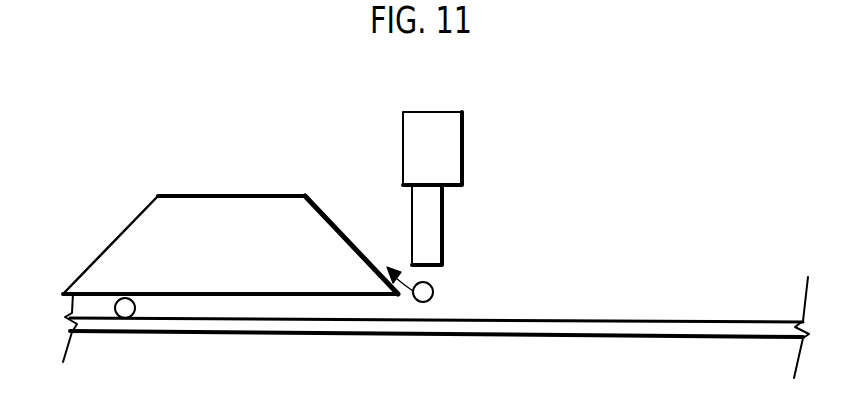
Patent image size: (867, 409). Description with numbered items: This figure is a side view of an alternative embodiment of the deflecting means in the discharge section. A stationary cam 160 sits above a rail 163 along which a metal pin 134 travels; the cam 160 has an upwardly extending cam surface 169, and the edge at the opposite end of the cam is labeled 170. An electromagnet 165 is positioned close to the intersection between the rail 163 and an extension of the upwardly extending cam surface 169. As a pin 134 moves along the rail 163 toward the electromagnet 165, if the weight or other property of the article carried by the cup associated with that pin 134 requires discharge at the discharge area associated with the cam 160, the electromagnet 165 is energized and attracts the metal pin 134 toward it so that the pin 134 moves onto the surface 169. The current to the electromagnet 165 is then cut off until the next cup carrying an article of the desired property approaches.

The stationary cam 160 is at (228, 214).
The leading edge of member 170 is at (162, 191).
The upwardly extending cam surface 169 is at (326, 208).
The electromagnet 165 is at (490, 120).
The pin 134 is at (126, 310).
The rail 163 is at (480, 327).